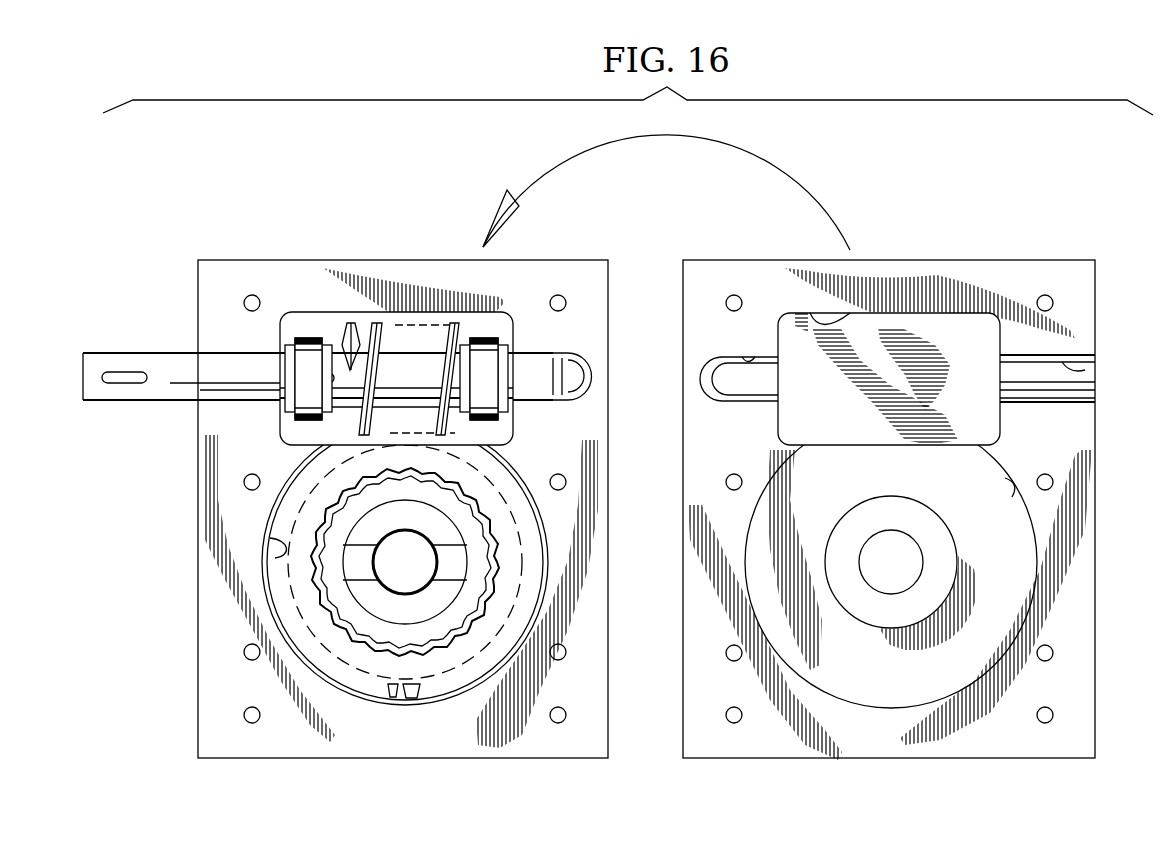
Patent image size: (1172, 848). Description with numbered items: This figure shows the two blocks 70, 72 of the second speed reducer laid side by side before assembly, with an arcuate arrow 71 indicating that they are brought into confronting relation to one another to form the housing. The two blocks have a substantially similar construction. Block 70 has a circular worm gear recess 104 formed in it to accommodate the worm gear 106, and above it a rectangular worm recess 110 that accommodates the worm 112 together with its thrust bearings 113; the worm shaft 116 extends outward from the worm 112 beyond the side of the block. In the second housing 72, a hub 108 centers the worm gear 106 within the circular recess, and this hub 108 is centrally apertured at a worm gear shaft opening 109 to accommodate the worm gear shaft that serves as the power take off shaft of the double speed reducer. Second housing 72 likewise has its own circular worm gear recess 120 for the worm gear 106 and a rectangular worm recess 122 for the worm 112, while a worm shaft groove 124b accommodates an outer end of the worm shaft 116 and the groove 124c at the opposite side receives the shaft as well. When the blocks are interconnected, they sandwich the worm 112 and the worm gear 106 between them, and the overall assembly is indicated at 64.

The drive assembly 64 is at (997, 212).
The block 70 is at (305, 260).
The arcuate arrow 71 is at (767, 163).
The block 72 is at (765, 260).
The circular worm gear recess 104 is at (270, 537).
The worm gear 106 is at (400, 697).
The hub 108 is at (437, 507).
The worm gear shaft opening 109 is at (858, 562).
The rectangular worm recess 110 is at (384, 331).
The worm 112 is at (430, 325).
The thrust bearings 113 is at (298, 342).
The worm shaft 116 is at (165, 353).
The circular worm gear recess 120 is at (1008, 485).
The rectangular worm recess 122 is at (820, 330).
The worm shaft groove 124b is at (1080, 372).
The shaft segment 124c is at (737, 355).